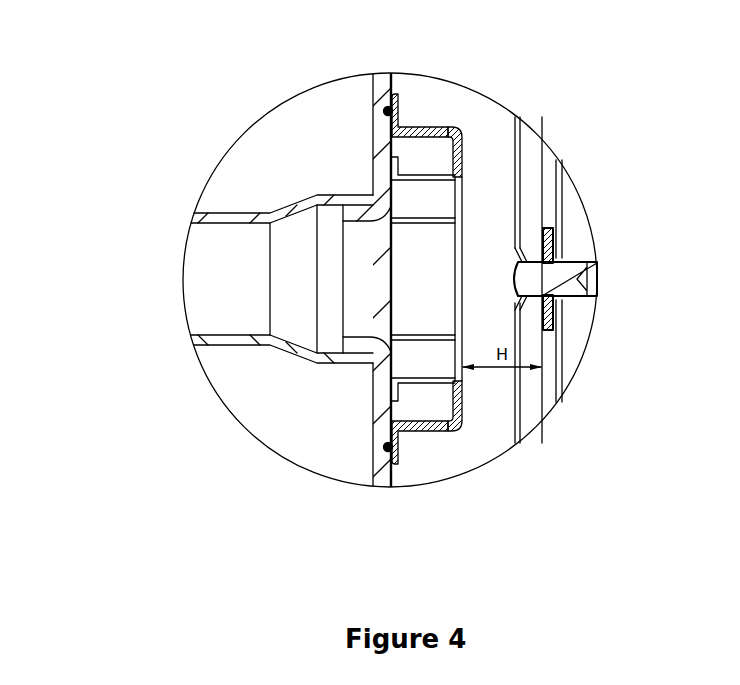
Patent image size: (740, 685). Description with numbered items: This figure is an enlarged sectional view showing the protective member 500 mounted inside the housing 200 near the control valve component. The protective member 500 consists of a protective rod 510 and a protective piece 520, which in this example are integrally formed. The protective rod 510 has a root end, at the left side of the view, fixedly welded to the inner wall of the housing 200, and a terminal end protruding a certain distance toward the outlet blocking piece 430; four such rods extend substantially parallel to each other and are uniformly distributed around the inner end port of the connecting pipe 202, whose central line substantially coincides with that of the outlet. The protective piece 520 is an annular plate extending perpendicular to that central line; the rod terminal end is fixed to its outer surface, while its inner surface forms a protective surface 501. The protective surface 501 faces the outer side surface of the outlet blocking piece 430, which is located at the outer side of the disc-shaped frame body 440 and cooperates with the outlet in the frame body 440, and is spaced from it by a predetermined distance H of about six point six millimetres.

The housing 200 is at (372, 443).
The connecting pipe 202 is at (215, 340).
The protective member 500 is at (519, 247).
The protective rod 510 is at (447, 128).
The protective piece 520 is at (465, 148).
The protective surface 501 is at (465, 247).
The outlet blocking piece 430 is at (547, 228).
The frame body 440 is at (555, 248).